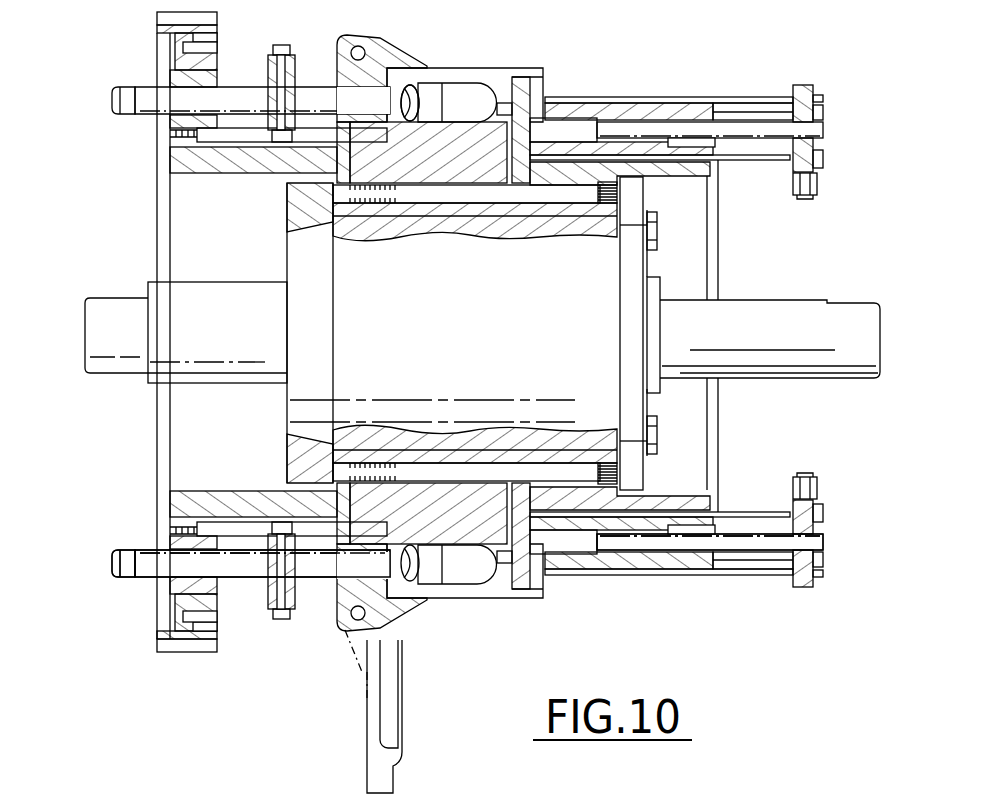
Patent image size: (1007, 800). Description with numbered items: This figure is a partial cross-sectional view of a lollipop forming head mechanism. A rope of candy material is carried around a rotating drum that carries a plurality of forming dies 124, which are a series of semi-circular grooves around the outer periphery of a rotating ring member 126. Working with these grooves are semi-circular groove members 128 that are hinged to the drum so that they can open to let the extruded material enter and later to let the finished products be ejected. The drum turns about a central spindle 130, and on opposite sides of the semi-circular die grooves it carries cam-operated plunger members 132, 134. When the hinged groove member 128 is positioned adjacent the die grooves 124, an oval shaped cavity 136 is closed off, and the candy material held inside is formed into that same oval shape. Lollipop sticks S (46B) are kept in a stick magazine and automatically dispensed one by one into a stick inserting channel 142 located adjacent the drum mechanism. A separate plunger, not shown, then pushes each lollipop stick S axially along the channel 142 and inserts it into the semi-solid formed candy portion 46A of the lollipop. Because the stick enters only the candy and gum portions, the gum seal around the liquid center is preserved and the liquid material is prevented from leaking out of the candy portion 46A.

The oval shaped cavity 136 is at (420, 92).
The semi-solid formed candy portion 46A is at (467, 86).
The lollipop stick S is at (627, 96).
The lollipop stick 46B is at (662, 106).
The stick inserting channel 142 is at (757, 95).
The central spindle 130 is at (772, 310).
The forming dies 124 is at (462, 113).
The rotating ring member 126 is at (462, 520).
The cam-operated plunger member 134 is at (665, 540).
The cam-operated plunger member 132 is at (252, 563).
The semi-circular groove member 128 is at (373, 745).